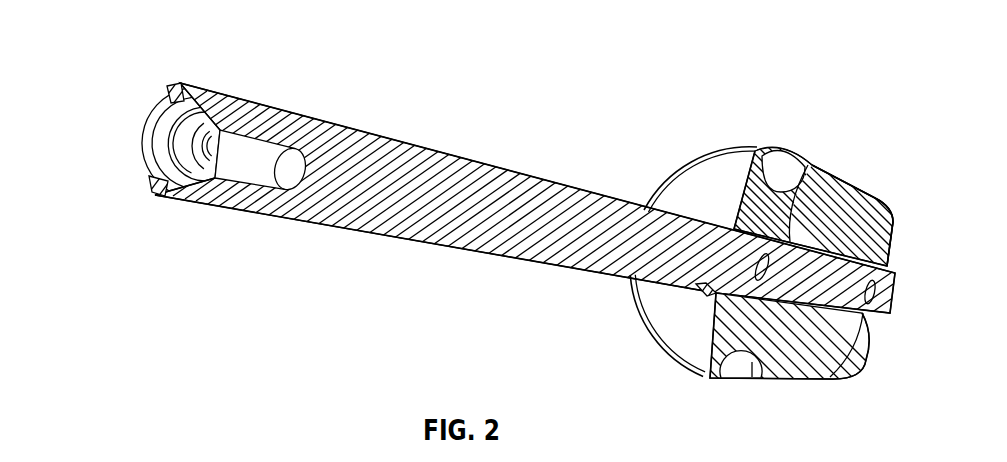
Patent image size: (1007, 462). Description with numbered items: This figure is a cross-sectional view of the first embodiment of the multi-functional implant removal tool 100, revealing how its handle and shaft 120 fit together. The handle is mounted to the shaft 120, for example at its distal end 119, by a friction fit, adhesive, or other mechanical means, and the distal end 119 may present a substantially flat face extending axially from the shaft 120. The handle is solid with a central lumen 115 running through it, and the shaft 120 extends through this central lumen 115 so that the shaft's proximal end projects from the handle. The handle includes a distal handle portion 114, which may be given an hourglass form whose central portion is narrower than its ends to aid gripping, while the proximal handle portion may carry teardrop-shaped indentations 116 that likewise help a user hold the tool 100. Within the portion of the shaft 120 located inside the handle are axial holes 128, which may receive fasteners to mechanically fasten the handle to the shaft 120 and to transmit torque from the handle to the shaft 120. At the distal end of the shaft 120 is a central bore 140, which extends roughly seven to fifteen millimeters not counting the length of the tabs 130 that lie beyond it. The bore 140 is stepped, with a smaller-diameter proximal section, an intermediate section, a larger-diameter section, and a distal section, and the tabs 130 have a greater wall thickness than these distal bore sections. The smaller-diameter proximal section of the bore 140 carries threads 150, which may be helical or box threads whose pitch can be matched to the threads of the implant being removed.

The multi-functional implant removal tool 100 is at (536, 243).
The distal handle portion 114 is at (750, 379).
The central lumen 115 is at (810, 178).
The indentations 116 is at (860, 190).
The distal end 119 is at (697, 183).
The shaft 120 is at (465, 193).
The axial holes 128 is at (708, 375).
The tabs 130 is at (197, 100).
The central bore 140 is at (250, 158).
The threads 150 is at (166, 157).